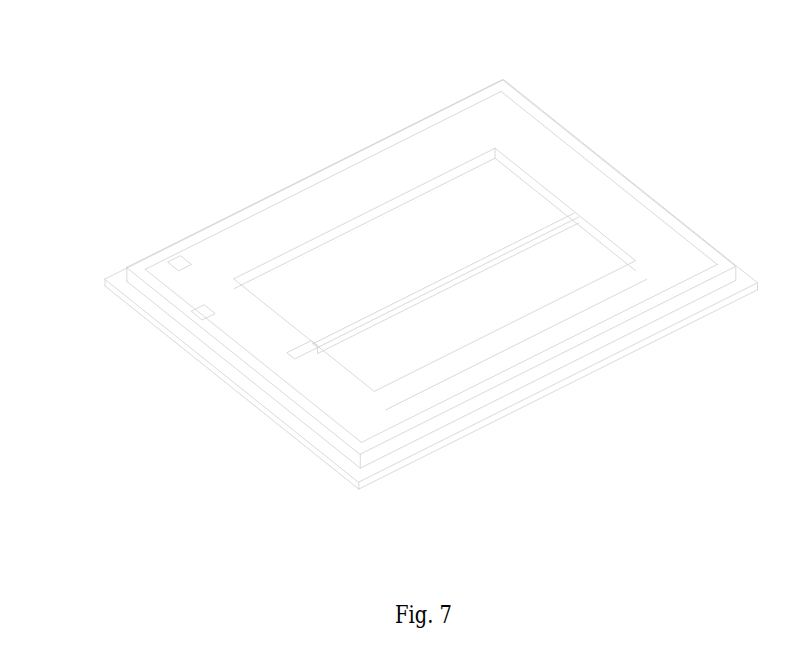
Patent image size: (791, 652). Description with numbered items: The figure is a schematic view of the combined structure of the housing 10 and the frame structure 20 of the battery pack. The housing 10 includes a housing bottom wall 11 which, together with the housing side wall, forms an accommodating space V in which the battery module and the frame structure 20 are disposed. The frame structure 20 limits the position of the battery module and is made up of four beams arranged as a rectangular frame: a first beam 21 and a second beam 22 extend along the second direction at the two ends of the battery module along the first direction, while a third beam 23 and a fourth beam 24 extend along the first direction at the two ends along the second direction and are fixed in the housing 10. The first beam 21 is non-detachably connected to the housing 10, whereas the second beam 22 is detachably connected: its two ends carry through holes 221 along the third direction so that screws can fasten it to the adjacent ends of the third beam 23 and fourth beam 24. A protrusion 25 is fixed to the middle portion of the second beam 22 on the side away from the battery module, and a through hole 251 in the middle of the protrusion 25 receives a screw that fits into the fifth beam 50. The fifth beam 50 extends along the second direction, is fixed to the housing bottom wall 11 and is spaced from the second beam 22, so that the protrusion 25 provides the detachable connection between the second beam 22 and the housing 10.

The housing 10 is at (143, 287).
The housing bottom wall 11 is at (428, 347).
The frame structure 20 is at (267, 203).
The first beam 21 is at (570, 157).
The second beam 22 is at (328, 392).
The third beam 23 is at (570, 328).
The fourth beam 24 is at (428, 128).
The protrusion 25 is at (263, 358).
The fifth beam 50 is at (203, 312).
The through hole 221 is at (180, 263).
The through hole 251 is at (268, 350).
The accommodating space V is at (537, 280).